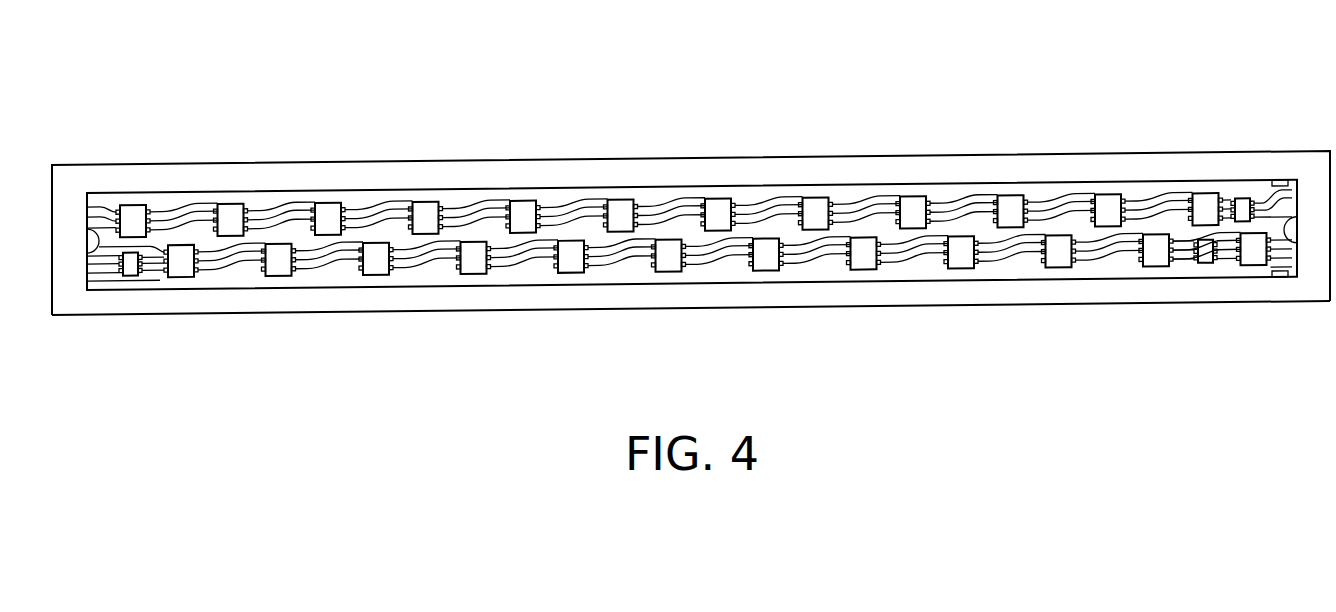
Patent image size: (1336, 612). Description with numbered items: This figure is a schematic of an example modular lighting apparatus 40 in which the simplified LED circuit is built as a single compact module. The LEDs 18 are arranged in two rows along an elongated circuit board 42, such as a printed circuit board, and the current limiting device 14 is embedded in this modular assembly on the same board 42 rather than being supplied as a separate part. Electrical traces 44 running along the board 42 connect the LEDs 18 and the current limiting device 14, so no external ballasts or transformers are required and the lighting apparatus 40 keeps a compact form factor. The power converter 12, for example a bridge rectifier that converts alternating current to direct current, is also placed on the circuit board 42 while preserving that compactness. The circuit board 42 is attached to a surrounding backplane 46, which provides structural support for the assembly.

The lighting apparatus 40 is at (1243, 82).
The circuit board 42 is at (929, 290).
The electrical traces 44 is at (424, 270).
The backplane 46 is at (755, 297).
The LEDs 18 is at (568, 274).
The current limiting device 14 is at (131, 270).
The power converter 12 is at (1200, 265).